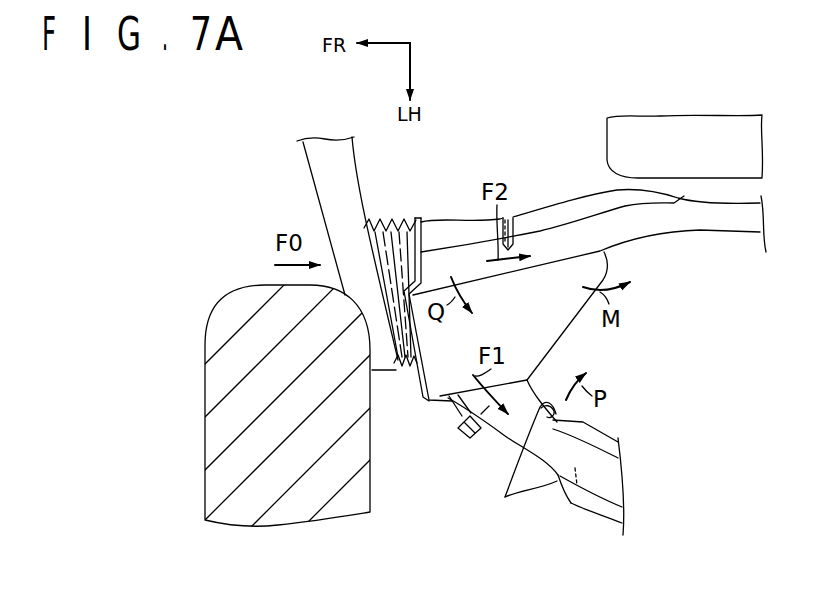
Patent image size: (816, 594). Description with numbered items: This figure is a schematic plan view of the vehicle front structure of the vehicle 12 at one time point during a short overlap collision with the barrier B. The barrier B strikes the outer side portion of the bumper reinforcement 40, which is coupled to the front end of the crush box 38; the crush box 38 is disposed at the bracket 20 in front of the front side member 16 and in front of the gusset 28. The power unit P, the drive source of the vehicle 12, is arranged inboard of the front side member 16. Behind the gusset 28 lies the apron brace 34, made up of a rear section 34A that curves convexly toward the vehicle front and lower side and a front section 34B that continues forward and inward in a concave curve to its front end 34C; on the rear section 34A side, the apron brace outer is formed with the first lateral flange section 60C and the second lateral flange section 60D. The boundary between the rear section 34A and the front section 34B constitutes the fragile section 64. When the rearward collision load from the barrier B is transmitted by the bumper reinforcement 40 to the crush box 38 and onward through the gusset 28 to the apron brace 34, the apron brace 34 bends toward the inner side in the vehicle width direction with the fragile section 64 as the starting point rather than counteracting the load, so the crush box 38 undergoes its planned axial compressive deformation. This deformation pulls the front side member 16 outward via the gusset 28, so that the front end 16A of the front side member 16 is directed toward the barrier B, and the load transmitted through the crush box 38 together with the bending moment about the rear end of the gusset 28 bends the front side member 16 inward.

The vehicle 12 is at (230, 135).
The bumper reinforcement 40 is at (317, 171).
The crush box 38 is at (387, 220).
The barrier B is at (251, 298).
The bracket 20 is at (424, 382).
The front side member 16 is at (701, 239).
The front end of the front side member 16A is at (440, 260).
The power unit P is at (676, 120).
The gusset 28 is at (564, 330).
The apron brace 34 is at (627, 483).
The rear section 34A is at (563, 483).
The front section 34B is at (508, 428).
The front end 34C is at (453, 418).
The fragile section 64 is at (513, 459).
The first lateral flange section 60C is at (645, 420).
The second lateral flange section 60D is at (603, 508).